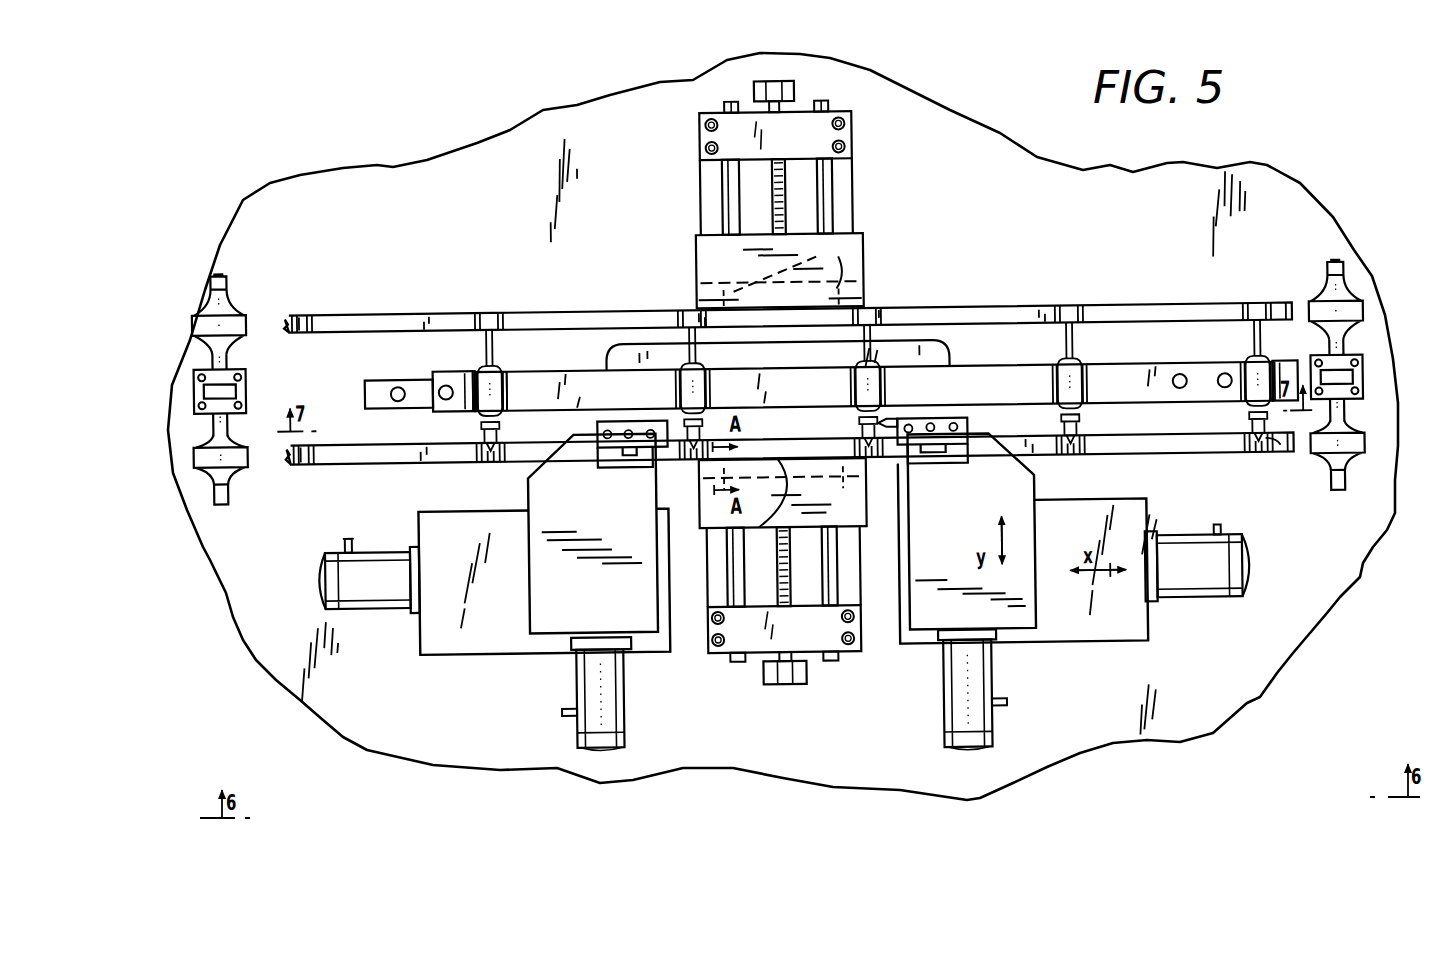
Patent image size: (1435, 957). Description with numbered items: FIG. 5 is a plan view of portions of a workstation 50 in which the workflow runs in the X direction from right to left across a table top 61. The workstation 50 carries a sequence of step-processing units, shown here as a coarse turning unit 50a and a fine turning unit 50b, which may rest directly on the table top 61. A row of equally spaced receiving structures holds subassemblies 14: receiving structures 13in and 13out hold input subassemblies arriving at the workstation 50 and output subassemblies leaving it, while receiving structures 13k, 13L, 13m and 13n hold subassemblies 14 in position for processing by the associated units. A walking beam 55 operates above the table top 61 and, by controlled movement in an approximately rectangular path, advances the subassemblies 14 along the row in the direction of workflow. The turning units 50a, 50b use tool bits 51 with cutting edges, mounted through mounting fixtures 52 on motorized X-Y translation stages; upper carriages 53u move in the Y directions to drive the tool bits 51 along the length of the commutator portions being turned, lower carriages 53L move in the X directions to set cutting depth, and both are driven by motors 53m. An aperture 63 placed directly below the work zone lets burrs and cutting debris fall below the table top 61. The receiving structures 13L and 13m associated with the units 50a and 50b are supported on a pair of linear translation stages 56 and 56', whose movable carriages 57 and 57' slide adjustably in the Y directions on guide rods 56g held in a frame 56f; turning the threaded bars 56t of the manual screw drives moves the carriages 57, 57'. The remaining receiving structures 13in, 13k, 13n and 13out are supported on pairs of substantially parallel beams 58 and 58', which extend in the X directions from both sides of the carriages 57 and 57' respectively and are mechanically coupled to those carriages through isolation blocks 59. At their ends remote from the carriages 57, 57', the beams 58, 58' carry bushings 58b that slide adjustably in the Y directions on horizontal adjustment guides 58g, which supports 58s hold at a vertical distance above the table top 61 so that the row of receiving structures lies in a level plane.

The receiving structure 13out is at (307, 311).
The receiving structure 13n is at (489, 311).
The receiving structure 13m is at (690, 320).
The receiving structure 13L is at (906, 309).
The receiving structure 13k is at (1096, 312).
The receiving structure 13in is at (1284, 310).
The subassembly 14 is at (477, 364).
The workstation 50 is at (547, 815).
The coarse turning unit 50a is at (1090, 651).
The fine turning unit 50b is at (492, 672).
The tool bit 51 is at (897, 426).
The mounting fixture 52 is at (968, 431).
The lower carriage 53L is at (420, 636).
The upper carriage 53u is at (561, 620).
The motor 53m is at (316, 578).
The walking beam 55 is at (562, 379).
The linear translation stage 56 is at (785, 631).
The linear translation stage 56' is at (833, 157).
The frame 56f is at (755, 641).
The guide rod 56g is at (735, 185).
The threaded bar 56t is at (789, 168).
The carriage 57 is at (767, 506).
The carriage 57' is at (749, 263).
The beam 58 is at (790, 469).
The beam 58' is at (787, 281).
The bushing 58b is at (247, 306).
The support 58s is at (243, 284).
The horizontal adjustment guide 58g is at (222, 505).
The isolation block 59 is at (862, 251).
The table top 61 is at (262, 650).
The aperture 63 is at (946, 347).